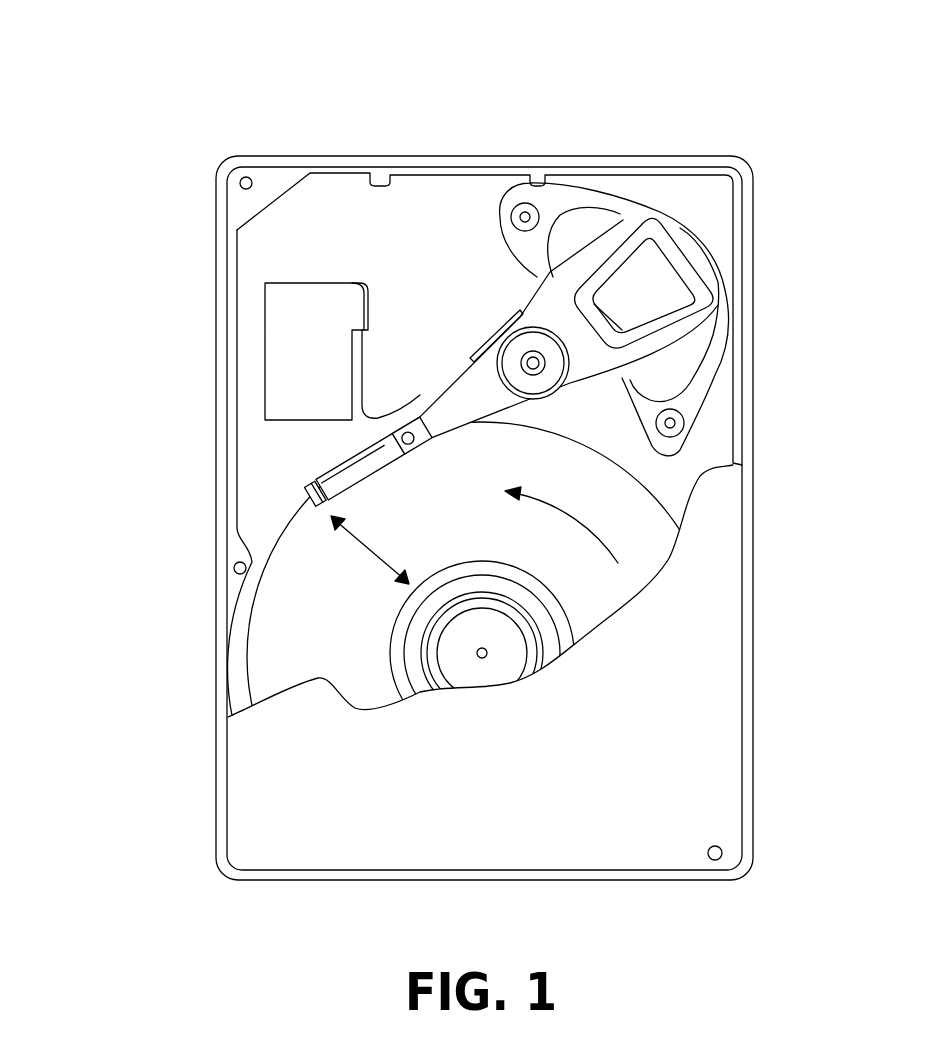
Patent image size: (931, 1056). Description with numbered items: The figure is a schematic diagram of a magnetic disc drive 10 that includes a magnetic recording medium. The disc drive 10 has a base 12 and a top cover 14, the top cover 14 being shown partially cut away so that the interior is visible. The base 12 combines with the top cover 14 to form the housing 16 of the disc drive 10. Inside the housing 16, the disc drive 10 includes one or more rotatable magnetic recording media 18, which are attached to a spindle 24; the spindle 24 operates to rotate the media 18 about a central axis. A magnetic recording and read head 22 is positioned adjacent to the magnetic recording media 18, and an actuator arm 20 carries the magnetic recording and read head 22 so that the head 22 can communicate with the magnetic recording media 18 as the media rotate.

The magnetic disc drive 10 is at (218, 90).
The base 12 is at (451, 265).
The top cover 14 is at (503, 747).
The housing 16 is at (745, 437).
The magnetic recording media 18 is at (469, 530).
The actuator arm 20 is at (477, 398).
The magnetic recording and read head 22 is at (304, 492).
The spindle 24 is at (477, 653).